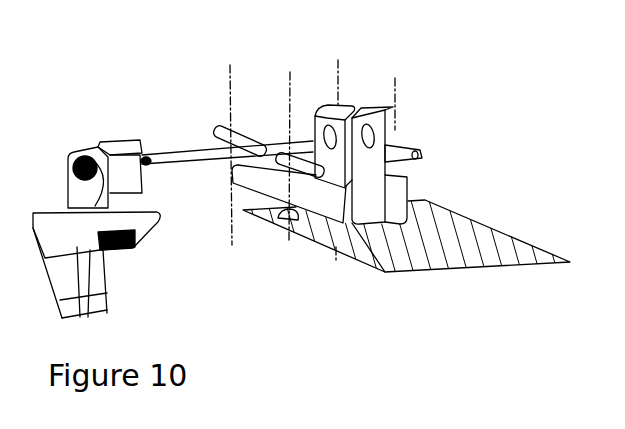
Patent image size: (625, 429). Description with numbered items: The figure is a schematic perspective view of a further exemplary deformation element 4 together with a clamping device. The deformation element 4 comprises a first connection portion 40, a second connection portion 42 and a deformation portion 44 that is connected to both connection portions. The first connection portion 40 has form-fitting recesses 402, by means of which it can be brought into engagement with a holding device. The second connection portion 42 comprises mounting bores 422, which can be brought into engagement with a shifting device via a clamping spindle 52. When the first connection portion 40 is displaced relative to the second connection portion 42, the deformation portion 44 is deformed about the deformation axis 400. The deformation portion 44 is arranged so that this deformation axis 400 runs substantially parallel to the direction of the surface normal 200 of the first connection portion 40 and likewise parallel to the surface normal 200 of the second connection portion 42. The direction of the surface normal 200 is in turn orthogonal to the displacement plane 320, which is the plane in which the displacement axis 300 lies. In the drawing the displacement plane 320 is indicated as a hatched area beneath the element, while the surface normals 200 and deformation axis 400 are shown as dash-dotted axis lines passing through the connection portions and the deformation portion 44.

The deformation element 4 is at (414, 69).
The first connection portion 40 is at (250, 210).
The second connection portion 42 is at (370, 160).
The deformation portion 44 is at (378, 240).
The clamping spindle 52 is at (217, 153).
The surface normal 200 is at (290, 72).
The displacement axis 300 is at (488, 258).
The displacement plane 320 is at (512, 262).
The deformation axis 400 is at (395, 82).
The form-fitting recesses 402 is at (233, 142).
The mounting bores 422 is at (388, 119).